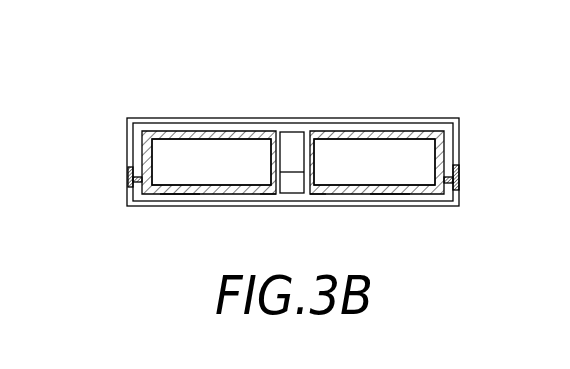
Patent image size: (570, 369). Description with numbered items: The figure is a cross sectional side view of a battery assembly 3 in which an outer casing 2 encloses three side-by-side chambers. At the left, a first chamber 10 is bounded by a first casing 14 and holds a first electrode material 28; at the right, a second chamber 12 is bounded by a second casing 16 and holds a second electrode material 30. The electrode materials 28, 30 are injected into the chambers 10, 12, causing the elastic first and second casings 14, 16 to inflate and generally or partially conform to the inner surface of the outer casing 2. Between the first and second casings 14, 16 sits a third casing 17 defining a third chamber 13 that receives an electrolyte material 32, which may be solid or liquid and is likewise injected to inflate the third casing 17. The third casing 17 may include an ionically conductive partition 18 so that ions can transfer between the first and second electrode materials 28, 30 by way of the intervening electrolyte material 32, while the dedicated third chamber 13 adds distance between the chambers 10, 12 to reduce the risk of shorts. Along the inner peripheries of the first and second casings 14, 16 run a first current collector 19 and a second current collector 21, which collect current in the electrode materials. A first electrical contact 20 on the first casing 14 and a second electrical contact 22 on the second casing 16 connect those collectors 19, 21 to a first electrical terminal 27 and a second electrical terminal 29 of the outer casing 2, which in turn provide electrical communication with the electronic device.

The battery assembly 3 is at (125, 59).
The outer casing 2 is at (458, 118).
The first chamber 10 is at (182, 156).
The second chamber 12 is at (355, 149).
The third chamber 13 is at (285, 131).
The first casing 14 is at (142, 147).
The second casing 16 is at (444, 160).
The third casing 17 is at (268, 194).
The ionically conductive partition 18 is at (316, 195).
The first current collector 19 is at (182, 194).
The first electrical contact 20 is at (139, 184).
The second current collector 21 is at (390, 194).
The second electrical contact 22 is at (448, 185).
The first electrical terminal 27 is at (128, 172).
The first electrode material 28 is at (256, 170).
The second electrical terminal 29 is at (459, 167).
The second electrode material 30 is at (421, 170).
The electrolyte material 32 is at (303, 169).